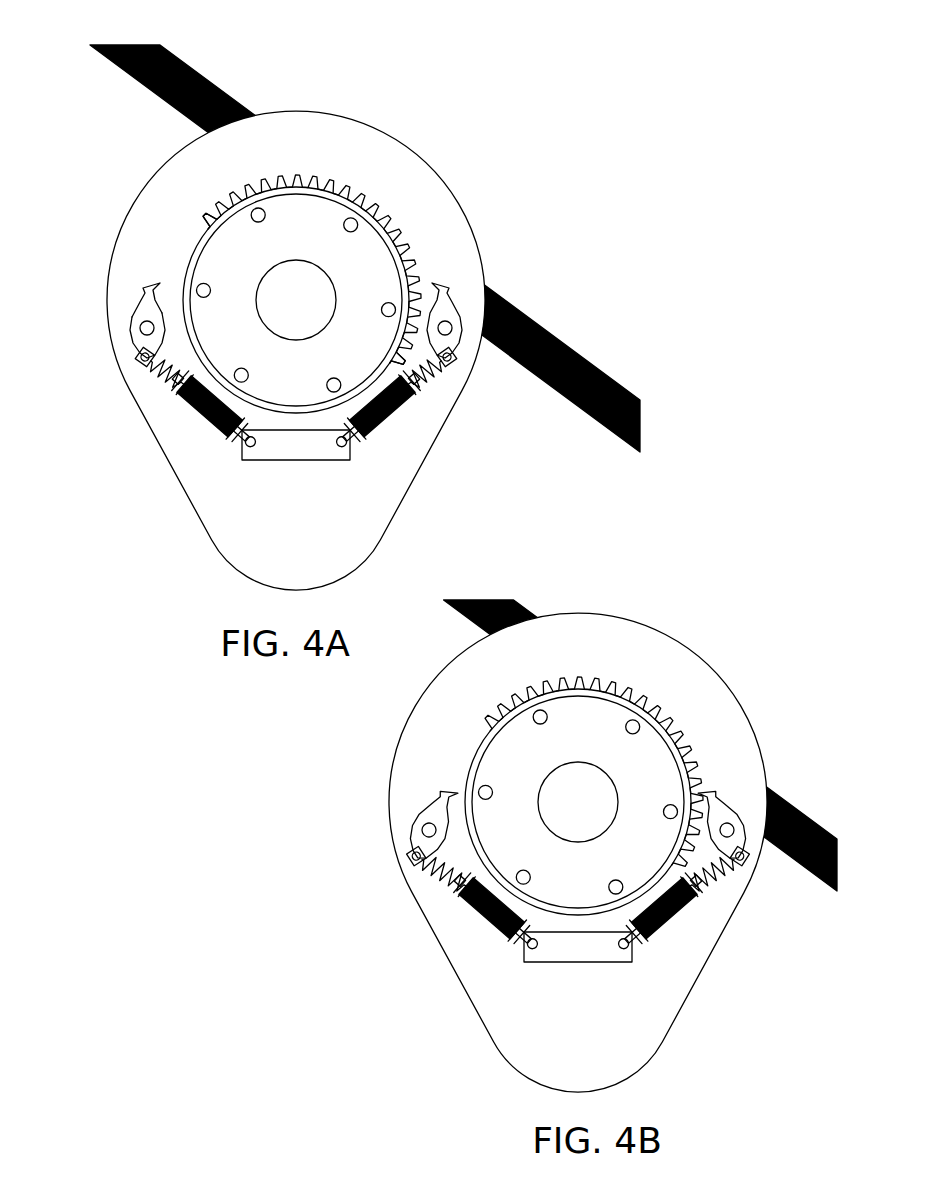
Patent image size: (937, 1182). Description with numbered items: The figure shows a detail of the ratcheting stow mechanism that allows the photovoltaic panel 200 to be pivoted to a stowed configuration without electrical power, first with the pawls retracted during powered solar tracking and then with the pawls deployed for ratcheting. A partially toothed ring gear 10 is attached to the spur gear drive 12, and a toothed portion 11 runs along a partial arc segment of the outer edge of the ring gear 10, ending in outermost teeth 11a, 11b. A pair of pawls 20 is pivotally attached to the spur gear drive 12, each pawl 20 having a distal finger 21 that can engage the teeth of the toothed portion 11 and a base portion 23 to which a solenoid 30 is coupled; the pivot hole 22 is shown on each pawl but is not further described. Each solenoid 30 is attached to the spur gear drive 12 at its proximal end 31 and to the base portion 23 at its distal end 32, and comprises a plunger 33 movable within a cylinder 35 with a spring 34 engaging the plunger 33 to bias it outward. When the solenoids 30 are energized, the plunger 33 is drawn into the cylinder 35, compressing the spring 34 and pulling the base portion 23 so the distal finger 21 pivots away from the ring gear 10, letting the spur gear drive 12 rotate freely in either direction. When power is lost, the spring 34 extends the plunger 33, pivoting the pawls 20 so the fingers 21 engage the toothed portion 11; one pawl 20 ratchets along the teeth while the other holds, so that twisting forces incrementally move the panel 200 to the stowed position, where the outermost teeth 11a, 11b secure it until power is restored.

In FIG. 4A, the photovoltaic panel 200 is at (212, 82).
In FIG. 4B, the photovoltaic panel 200 is at (517, 602).
In FIG. 4A, the ring gear 10 is at (215, 275).
In FIG. 4A, the toothed portion 11 is at (342, 198).
In FIG. 4B, the toothed portion 11 is at (657, 685).
In FIG. 4A, the outermost tooth 11a is at (198, 218).
In FIG. 4A, the outermost tooth 11b is at (395, 360).
In FIG. 4A, the spur gear drive 12 is at (415, 210).
In FIG. 4B, the spur gear drive 12 is at (730, 727).
In FIG. 4A, the pawl 20 is at (293, 433).
In FIG. 4B, the pawl 20 is at (415, 805).
In FIG. 4A, the distal finger 21 is at (158, 282).
In FIG. 4A, the lever pivot hole 22 is at (135, 318).
In FIG. 4A, the base portion 23 is at (143, 340).
In FIG. 4A, the solenoid 30 is at (245, 438).
In FIG. 4B, the solenoid 30 is at (468, 912).
In FIG. 4A, the proximal end 31 is at (243, 448).
In FIG. 4A, the distal end 32 is at (138, 358).
In FIG. 4A, the plunger 33 is at (163, 380).
In FIG. 4A, the spring 34 is at (177, 397).
In FIG. 4A, the cylinder 35 is at (203, 420).